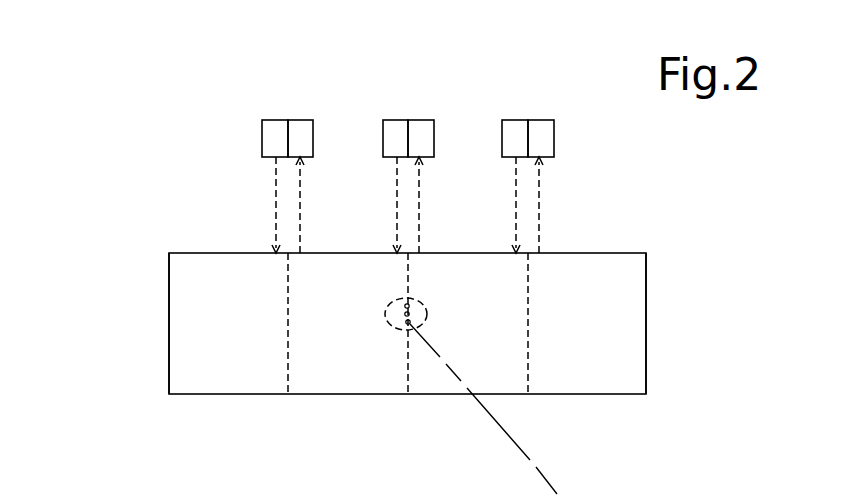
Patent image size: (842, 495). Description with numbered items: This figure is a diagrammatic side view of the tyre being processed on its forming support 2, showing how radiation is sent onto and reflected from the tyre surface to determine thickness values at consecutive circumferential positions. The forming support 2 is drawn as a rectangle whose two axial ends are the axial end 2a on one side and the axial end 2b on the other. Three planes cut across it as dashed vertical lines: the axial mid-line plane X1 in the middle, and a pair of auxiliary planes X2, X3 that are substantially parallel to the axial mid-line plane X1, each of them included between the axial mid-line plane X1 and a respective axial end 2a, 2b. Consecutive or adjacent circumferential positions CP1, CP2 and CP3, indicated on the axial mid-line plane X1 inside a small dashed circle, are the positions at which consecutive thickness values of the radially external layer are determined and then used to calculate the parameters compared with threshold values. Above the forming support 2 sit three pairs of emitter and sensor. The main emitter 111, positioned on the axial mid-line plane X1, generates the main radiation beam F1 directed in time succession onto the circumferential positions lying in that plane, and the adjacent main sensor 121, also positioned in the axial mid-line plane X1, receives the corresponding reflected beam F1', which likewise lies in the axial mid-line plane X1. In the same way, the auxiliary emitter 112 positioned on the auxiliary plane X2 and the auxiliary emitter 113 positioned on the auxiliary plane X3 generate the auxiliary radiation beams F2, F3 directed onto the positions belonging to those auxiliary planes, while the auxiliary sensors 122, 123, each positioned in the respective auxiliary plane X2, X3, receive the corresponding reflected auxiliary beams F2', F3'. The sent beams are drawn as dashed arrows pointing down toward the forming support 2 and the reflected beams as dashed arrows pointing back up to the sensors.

The forming support 2 is at (668, 262).
The axial end of the forming support 2a is at (646, 338).
The axial end of the forming support 2b is at (169, 322).
The main emitter 111 is at (397, 132).
The main sensor 121 is at (423, 133).
The auxiliary emitter 112 is at (515, 130).
The auxiliary sensor 122 is at (543, 133).
The auxiliary emitter 113 is at (275, 130).
The auxiliary sensor 123 is at (305, 133).
The main radiation beam F1 is at (373, 205).
The main reflected beam F1' is at (449, 205).
The auxiliary radiation beam F2 is at (492, 205).
The auxiliary reflected beam F2' is at (591, 205).
The auxiliary radiation beam F3 is at (218, 199).
The auxiliary reflected beam F3' is at (330, 205).
The axial mid-line plane X1 is at (408, 365).
The auxiliary plane X2 is at (528, 350).
The auxiliary plane X3 is at (288, 348).
The circumferential position CP1 is at (409, 306).
The circumferential position CP2 is at (409, 313).
The circumferential position CP3 is at (406, 322).